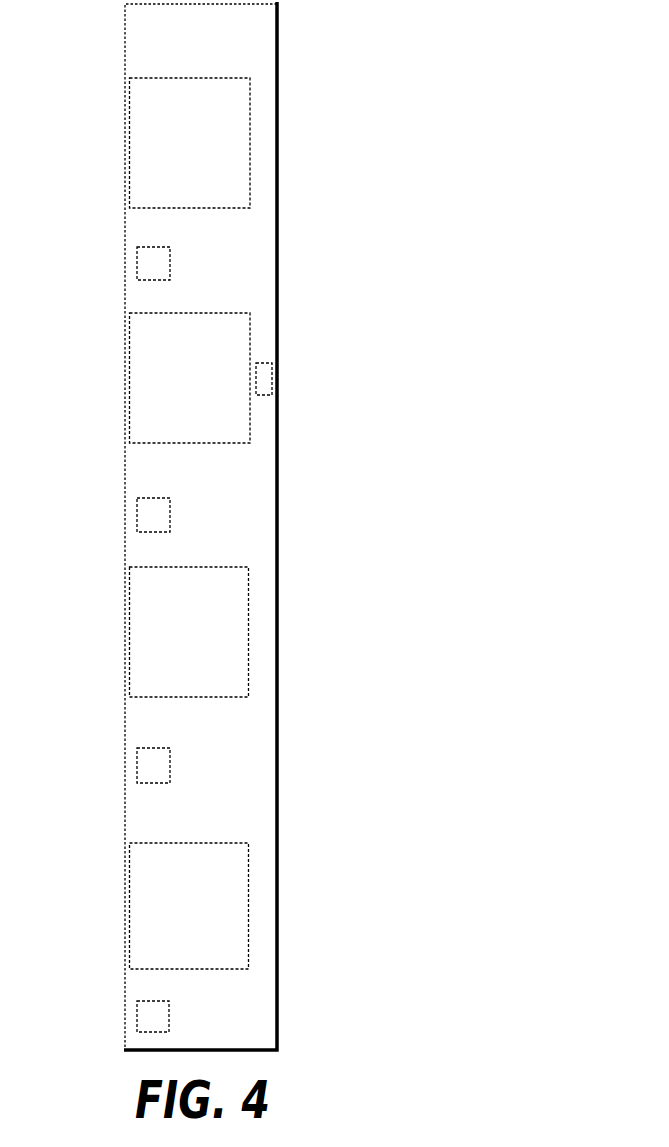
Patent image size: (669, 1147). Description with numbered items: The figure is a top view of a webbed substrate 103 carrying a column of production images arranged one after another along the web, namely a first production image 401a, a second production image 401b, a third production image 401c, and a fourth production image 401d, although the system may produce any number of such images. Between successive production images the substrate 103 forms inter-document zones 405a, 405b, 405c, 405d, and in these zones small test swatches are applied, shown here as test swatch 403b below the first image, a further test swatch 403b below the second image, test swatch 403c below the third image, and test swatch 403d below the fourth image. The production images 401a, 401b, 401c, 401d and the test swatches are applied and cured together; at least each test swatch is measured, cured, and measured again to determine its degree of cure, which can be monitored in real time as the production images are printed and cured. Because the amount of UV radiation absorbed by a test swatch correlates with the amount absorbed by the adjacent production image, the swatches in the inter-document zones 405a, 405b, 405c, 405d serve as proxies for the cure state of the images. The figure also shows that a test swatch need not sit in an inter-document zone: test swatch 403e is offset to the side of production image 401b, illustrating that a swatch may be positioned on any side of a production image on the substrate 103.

The webbed substrate 103 is at (153, 32).
The production image 401a is at (153, 143).
The production image 401b is at (153, 378).
The production image 401c is at (153, 632).
The production image 401d is at (153, 905).
The test swatch 403b is at (153, 264).
The test swatch 403c is at (153, 765).
The test swatch 403d is at (153, 1015).
The test swatch 403e is at (263, 378).
The inter-document zone 405a is at (153, 226).
The inter-document zone 405b is at (153, 466).
The inter-document zone 405c is at (153, 722).
The inter-document zone 405d is at (153, 985).